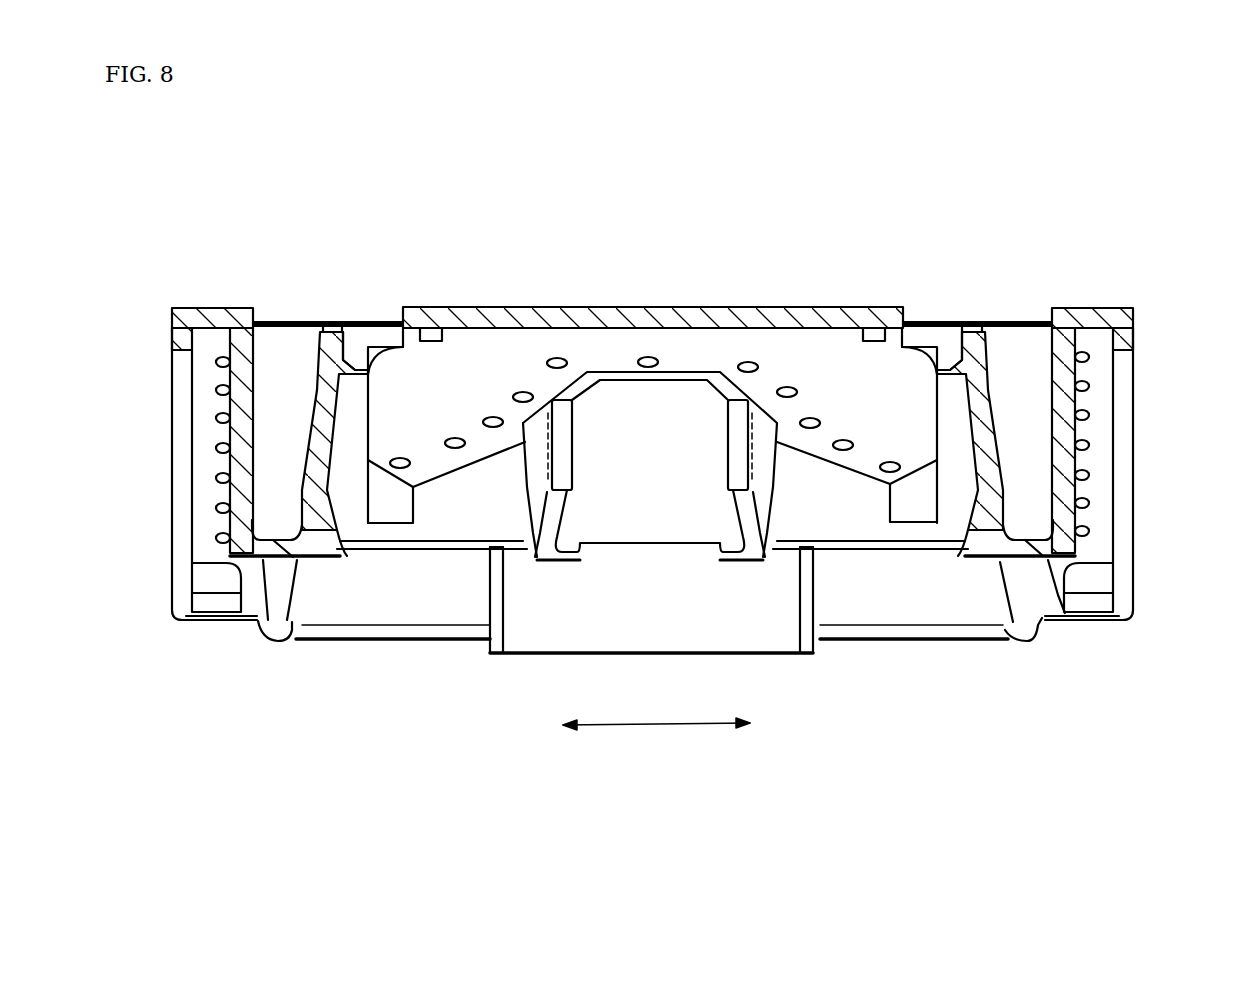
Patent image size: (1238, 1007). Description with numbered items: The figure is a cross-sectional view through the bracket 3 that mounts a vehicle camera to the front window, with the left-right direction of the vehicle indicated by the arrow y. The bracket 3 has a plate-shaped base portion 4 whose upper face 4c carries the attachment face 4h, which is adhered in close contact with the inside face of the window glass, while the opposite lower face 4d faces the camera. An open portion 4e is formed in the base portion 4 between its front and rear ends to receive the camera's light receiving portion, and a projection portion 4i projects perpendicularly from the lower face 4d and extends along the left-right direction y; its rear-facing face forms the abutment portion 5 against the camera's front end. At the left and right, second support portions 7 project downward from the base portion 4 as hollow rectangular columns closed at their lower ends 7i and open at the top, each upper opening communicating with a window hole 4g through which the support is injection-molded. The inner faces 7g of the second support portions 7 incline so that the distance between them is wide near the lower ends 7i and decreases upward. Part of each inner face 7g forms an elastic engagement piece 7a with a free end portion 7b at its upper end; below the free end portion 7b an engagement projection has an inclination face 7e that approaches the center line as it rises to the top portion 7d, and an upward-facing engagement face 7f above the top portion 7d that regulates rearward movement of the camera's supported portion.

The bracket 3 is at (1082, 297).
The base portion 4 is at (652, 387).
The upper face 4c is at (763, 308).
The lower face 4d is at (497, 375).
The open portion 4e is at (640, 423).
The window hole 4g is at (360, 335).
The attachment face 4h is at (697, 308).
The projection portion 4i is at (767, 598).
The abutment portion 5 is at (651, 628).
The second support portion 7 is at (237, 495).
The elastic engagement piece 7a is at (262, 430).
The free end portion 7b is at (335, 330).
The top portion 7d is at (355, 335).
The inclination face 7e is at (368, 378).
The engagement face 7f is at (368, 328).
The inner face 7g is at (325, 560).
The lower end 7i is at (257, 630).
The left-right direction y is at (640, 723).